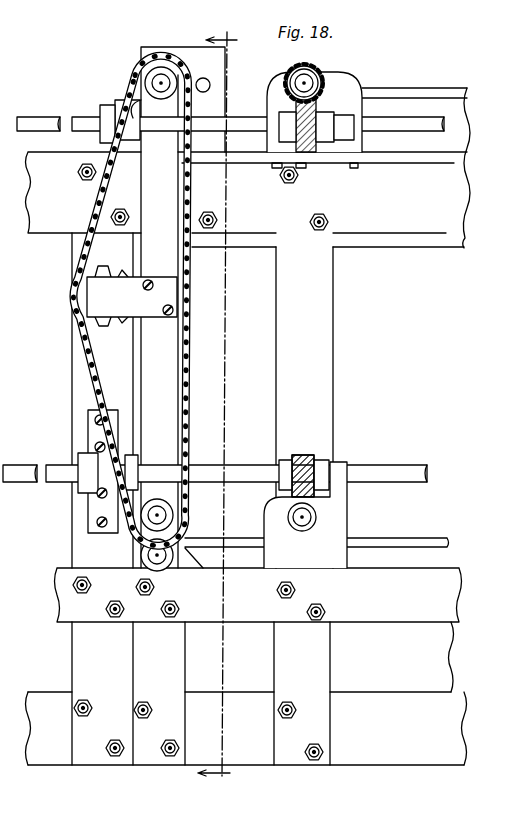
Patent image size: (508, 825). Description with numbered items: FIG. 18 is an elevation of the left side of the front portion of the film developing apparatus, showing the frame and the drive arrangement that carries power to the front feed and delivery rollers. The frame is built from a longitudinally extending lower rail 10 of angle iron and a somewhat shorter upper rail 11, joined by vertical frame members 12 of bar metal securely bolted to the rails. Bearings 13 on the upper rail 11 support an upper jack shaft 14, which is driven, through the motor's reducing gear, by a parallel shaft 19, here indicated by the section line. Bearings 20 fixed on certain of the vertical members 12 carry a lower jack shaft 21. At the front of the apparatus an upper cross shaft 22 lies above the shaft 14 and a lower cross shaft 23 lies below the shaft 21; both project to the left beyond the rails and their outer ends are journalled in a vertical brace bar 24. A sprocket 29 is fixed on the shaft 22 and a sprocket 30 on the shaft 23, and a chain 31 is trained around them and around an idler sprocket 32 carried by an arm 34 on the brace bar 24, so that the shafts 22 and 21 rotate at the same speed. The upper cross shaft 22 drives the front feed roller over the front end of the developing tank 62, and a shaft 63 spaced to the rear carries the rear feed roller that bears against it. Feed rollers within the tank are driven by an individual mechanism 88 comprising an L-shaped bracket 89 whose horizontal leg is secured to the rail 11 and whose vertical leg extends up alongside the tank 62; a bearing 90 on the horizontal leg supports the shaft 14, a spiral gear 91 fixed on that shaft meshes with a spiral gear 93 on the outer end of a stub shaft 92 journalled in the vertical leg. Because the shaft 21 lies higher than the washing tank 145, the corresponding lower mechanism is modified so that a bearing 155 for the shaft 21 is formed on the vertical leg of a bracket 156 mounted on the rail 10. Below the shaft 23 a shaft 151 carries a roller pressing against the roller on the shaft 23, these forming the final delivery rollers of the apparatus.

The lower rail 10 is at (458, 612).
The upper rail 11 is at (432, 212).
The vertical frame member 12 is at (75, 386).
The bearing 13 is at (119, 102).
The upper jack shaft 14 is at (36, 118).
The shaft 19 is at (217, 411).
The bearing 20 is at (92, 517).
The lower jack shaft 21 is at (416, 471).
The upper cross shaft 22 is at (159, 81).
The lower cross shaft 23 is at (143, 538).
The vertical brace bar 24 is at (147, 345).
The sprocket 29 is at (133, 117).
The sprocket 30 is at (139, 483).
The chain 31 is at (183, 410).
The idler sprocket 32 is at (100, 320).
The arm 34 is at (88, 306).
The developing tank 62 is at (418, 98).
The shaft 63 is at (208, 83).
The mechanism 88 is at (318, 72).
The L-shaped bracket 89 is at (345, 90).
The bearing 90 is at (340, 125).
The spiral gear 91 is at (306, 153).
The stub shaft 92 is at (300, 78).
The spiral gear 93 is at (318, 68).
The washing tank 145 is at (443, 664).
The shaft 151 is at (158, 560).
The bearing 155 is at (340, 466).
The bracket 156 is at (342, 532).